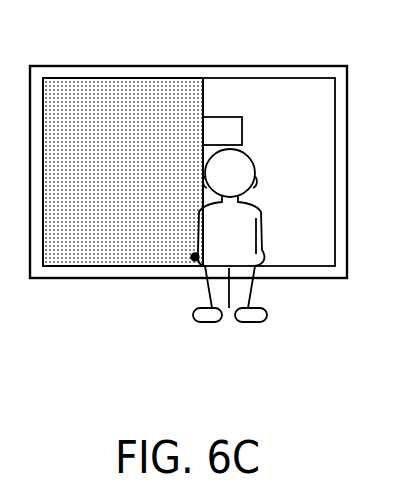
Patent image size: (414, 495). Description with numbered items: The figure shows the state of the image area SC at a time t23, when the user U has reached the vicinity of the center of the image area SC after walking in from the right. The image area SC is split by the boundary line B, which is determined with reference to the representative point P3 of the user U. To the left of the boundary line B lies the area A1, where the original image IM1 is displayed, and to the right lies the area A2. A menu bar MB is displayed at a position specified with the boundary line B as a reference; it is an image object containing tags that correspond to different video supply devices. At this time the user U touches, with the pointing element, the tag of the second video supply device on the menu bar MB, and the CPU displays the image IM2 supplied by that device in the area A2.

The time t23 is at (60, 40).
The image area SC is at (322, 279).
The area A1 is at (78, 266).
The area A2 is at (298, 88).
The boundary line B is at (203, 95).
The menu bar MB is at (228, 125).
The representative point P3 is at (192, 262).
The user U is at (212, 310).